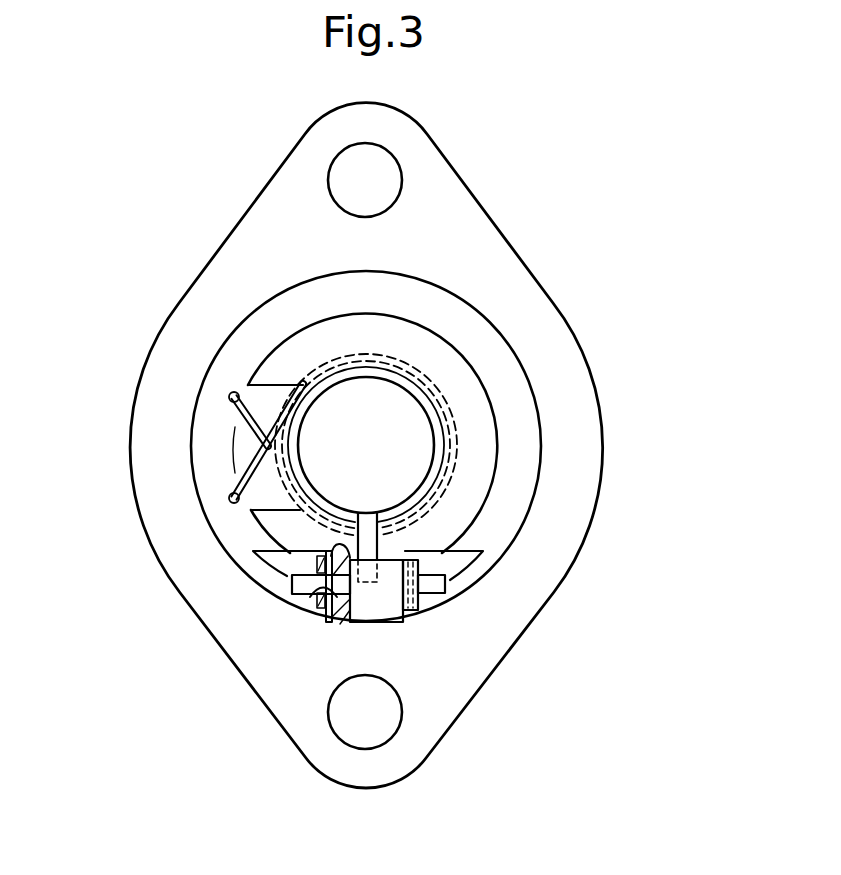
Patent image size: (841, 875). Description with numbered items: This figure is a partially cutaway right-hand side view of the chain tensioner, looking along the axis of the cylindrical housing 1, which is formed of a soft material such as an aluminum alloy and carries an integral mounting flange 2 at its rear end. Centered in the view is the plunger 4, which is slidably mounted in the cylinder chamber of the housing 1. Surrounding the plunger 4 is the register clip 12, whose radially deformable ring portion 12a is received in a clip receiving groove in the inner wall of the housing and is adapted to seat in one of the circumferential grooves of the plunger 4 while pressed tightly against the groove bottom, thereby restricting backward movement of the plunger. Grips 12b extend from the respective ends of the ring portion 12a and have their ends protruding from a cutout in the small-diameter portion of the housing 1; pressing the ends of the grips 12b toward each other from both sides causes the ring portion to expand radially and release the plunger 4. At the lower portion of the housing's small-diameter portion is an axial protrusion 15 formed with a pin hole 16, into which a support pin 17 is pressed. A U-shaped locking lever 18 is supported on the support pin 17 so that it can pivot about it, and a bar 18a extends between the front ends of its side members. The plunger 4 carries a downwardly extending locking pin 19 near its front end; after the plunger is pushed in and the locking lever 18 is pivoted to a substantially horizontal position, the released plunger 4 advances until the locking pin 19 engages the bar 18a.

The housing 1 is at (237, 328).
The mounting flange 2 is at (268, 217).
The plunger 4 is at (413, 452).
The register clip 12 is at (437, 378).
The ring portion 12a is at (457, 417).
The grips 12b is at (229, 399).
The axial protrusion 15 is at (307, 602).
The pin hole 16 is at (336, 608).
The support pin 17 is at (290, 582).
The locking lever 18 is at (373, 613).
The bar 18a is at (385, 597).
The locking pin 19 is at (379, 528).